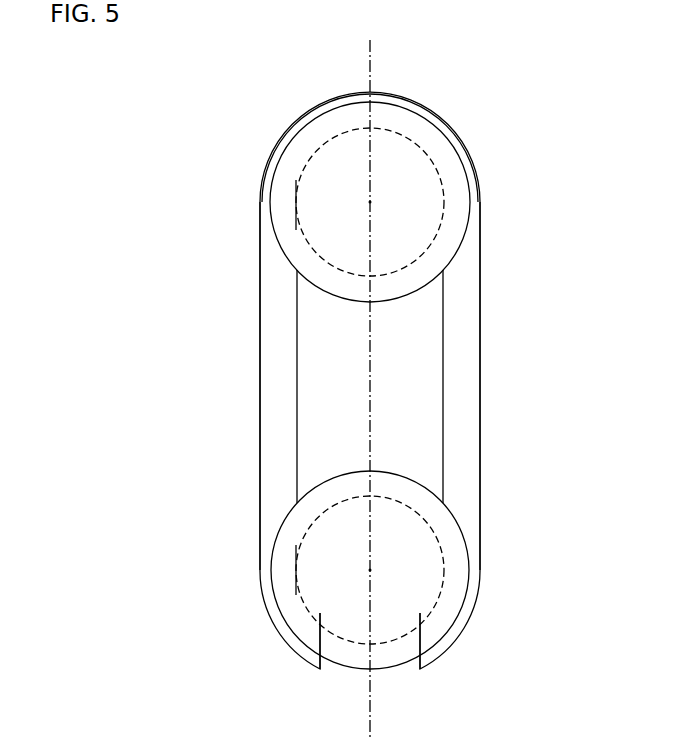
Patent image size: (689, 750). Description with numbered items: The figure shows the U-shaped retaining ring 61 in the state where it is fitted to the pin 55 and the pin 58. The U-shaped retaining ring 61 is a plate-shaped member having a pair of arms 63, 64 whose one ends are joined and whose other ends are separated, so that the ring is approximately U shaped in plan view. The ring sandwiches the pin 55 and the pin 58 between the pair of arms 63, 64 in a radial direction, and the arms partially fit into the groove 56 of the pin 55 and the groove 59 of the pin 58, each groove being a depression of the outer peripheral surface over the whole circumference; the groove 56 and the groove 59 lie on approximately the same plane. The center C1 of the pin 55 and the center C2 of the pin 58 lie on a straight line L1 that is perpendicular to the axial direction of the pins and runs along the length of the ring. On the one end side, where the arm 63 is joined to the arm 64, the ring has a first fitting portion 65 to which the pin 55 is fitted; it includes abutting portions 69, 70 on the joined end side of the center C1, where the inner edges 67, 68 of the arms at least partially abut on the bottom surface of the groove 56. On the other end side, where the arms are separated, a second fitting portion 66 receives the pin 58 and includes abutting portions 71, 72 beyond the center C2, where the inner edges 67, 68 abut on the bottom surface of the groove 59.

The U-shaped retaining ring 61 is at (525, 81).
The pin 55 is at (408, 238).
The groove 56 is at (387, 283).
The pin 58 is at (405, 530).
The groove 59 is at (405, 493).
The arm 63 is at (267, 343).
The arm 64 is at (470, 372).
The first fitting portion 65 is at (290, 193).
The second fitting portion 66 is at (290, 569).
The inner edge 67 is at (298, 385).
The inner edge 68 is at (443, 392).
The abutting portion 69 is at (305, 167).
The abutting portion 70 is at (440, 158).
The abutting portion 71 is at (320, 613).
The abutting portion 72 is at (420, 613).
The center of pin 55 C1 is at (372, 202).
The center of pin 58 C2 is at (372, 568).
The straight line L1 is at (370, 713).